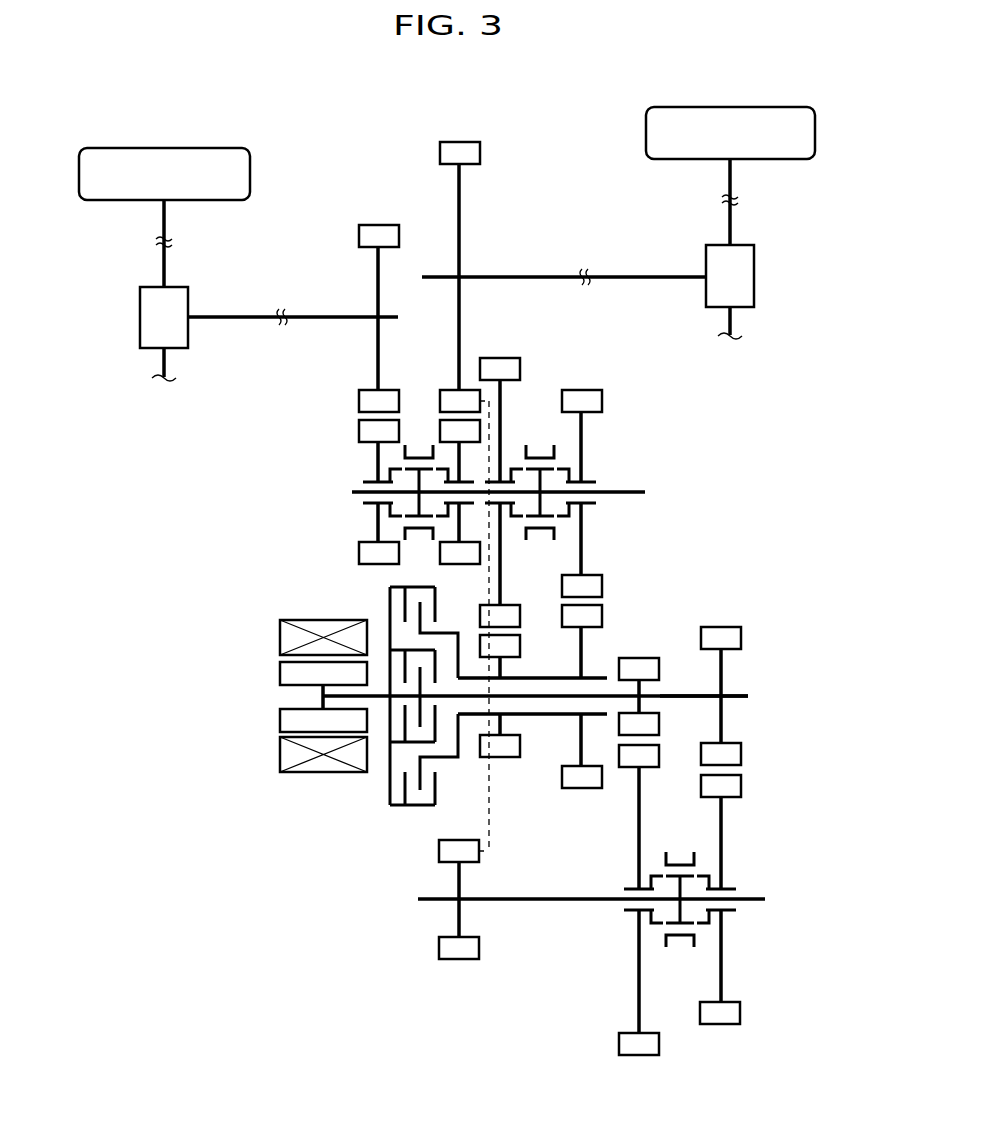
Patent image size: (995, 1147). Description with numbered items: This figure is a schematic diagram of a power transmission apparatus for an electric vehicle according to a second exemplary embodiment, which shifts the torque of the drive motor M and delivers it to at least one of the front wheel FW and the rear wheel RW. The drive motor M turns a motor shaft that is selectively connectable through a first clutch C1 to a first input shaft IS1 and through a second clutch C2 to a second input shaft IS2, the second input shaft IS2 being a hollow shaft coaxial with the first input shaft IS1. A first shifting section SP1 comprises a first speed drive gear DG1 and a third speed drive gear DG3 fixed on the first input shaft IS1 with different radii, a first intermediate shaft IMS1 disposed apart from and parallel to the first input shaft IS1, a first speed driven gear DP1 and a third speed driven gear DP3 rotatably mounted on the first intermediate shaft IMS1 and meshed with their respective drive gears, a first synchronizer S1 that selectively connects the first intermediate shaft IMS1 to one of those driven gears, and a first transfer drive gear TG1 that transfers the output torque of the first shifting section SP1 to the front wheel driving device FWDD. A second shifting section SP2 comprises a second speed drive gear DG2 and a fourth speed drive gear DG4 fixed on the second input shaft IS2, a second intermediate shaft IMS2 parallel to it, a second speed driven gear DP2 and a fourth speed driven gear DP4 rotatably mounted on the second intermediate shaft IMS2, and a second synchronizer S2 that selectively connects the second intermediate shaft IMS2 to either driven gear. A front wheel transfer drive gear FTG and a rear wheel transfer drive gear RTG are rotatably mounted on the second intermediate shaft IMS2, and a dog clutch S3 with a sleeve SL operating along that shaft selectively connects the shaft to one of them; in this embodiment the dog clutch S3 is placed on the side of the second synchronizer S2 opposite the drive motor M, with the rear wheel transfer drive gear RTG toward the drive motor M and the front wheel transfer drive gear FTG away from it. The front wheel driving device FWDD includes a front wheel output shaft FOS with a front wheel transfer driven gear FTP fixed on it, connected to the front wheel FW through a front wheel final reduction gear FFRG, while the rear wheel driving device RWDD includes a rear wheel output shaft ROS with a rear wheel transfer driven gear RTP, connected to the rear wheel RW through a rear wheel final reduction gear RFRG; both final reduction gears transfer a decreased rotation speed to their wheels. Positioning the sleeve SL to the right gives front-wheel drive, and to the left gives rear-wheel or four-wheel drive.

The rear wheel RW is at (166, 148).
The rear wheel driving device RWDD is at (393, 163).
The rear wheel transfer driven gear RTP is at (380, 225).
The rear wheel output shaft ROS is at (327, 317).
The rear wheel final reduction gear RFRG is at (140, 317).
The dog clutch S3 is at (420, 434).
The sleeve SL is at (405, 458).
The rear wheel transfer drive gear RTG is at (359, 554).
The front wheel transfer drive gear FTG is at (440, 553).
The front wheel transfer driven gear FTP is at (461, 142).
The front wheel driving device FWDD is at (593, 192).
The front wheel output shaft FOS is at (627, 277).
The front wheel FW is at (732, 107).
The front wheel final reduction gear FFRG is at (754, 277).
The second speed driven gear DP2 is at (502, 358).
The fourth speed driven gear DP4 is at (583, 390).
The second shifting section SP2 is at (628, 415).
The second intermediate shaft IMS2 is at (622, 489).
The second synchronizer S2 is at (540, 539).
The second input shaft IS2 is at (593, 677).
The first speed drive gear DG1 is at (660, 668).
The second speed drive gear DG2 is at (502, 757).
The third speed drive gear DG3 is at (723, 627).
The fourth speed drive gear DG4 is at (583, 788).
The first input shaft IS1 is at (740, 693).
The drive motor M is at (280, 752).
The first clutch C1 is at (413, 743).
The second clutch C2 is at (412, 807).
The first synchronizer S1 is at (675, 846).
The first intermediate shaft IMS1 is at (743, 897).
The first shifting section SP1 is at (763, 910).
The first transfer drive gear TG1 is at (461, 959).
The first speed driven gear DP1 is at (641, 1055).
The third speed driven gear DP3 is at (740, 1012).